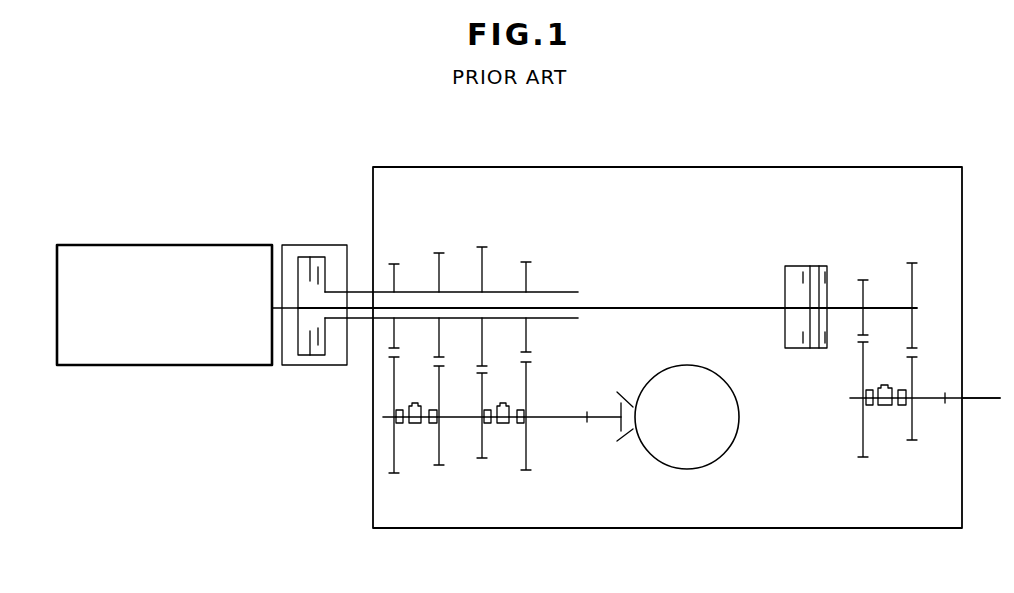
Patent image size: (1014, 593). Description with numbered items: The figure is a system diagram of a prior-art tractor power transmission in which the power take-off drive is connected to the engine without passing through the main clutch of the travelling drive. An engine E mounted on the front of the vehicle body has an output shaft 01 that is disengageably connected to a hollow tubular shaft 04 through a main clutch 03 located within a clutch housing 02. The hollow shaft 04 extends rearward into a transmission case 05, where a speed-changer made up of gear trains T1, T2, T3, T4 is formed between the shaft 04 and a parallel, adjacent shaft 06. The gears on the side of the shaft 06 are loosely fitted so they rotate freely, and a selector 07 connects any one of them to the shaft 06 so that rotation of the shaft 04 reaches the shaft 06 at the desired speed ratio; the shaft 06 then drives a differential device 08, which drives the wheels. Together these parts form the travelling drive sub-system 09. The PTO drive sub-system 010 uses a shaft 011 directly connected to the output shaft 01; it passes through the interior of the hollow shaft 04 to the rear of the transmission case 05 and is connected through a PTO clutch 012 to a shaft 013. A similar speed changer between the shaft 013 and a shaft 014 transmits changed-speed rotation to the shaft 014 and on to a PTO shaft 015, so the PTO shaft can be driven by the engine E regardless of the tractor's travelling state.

The engine E is at (164, 315).
The output shaft 01 is at (272, 312).
The clutch housing 02 is at (295, 367).
The main clutch 03 is at (293, 344).
The hollow tubular shaft 04 is at (560, 292).
The transmission case 05 is at (405, 531).
The shaft 06 is at (547, 418).
The selector 07 is at (502, 403).
The differential device 08 is at (686, 365).
The travelling drive sub-system 09 is at (498, 483).
The PTO drive sub-system 010 is at (829, 242).
The shaft 011 is at (636, 306).
The PTO clutch 012 is at (787, 263).
The shaft 013 is at (845, 305).
The shaft 014 is at (930, 400).
The PTO shaft 015 is at (983, 396).
The gear train T1 is at (387, 359).
The gear train T2 is at (431, 356).
The gear train T3 is at (470, 362).
The gear train T4 is at (516, 358).